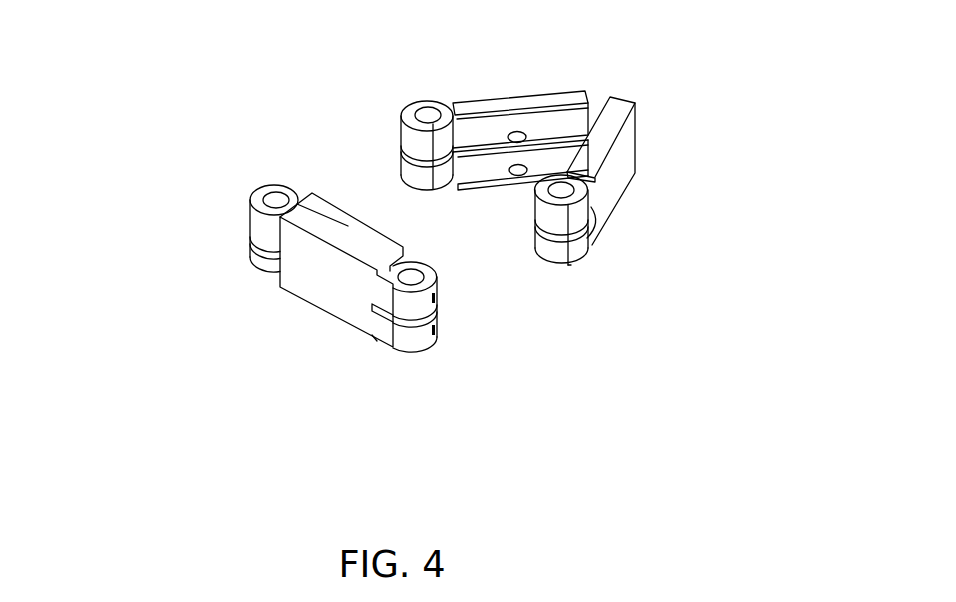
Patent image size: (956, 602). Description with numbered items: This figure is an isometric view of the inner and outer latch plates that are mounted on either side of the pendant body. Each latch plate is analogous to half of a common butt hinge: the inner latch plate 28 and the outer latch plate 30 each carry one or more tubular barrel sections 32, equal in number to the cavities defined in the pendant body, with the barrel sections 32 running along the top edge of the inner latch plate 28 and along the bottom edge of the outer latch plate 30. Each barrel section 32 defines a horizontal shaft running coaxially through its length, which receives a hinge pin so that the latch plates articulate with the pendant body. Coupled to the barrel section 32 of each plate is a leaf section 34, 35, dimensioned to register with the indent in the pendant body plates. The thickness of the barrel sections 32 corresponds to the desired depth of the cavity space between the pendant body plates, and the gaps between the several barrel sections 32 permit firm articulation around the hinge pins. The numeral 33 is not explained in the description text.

The inner latch plate 28 is at (348, 226).
The outer latch plate 30 is at (360, 338).
The barrel section 32 is at (428, 302).
The pivot bore 33 is at (288, 190).
The leaf section 34 is at (327, 282).
The leaf section 35 is at (492, 132).